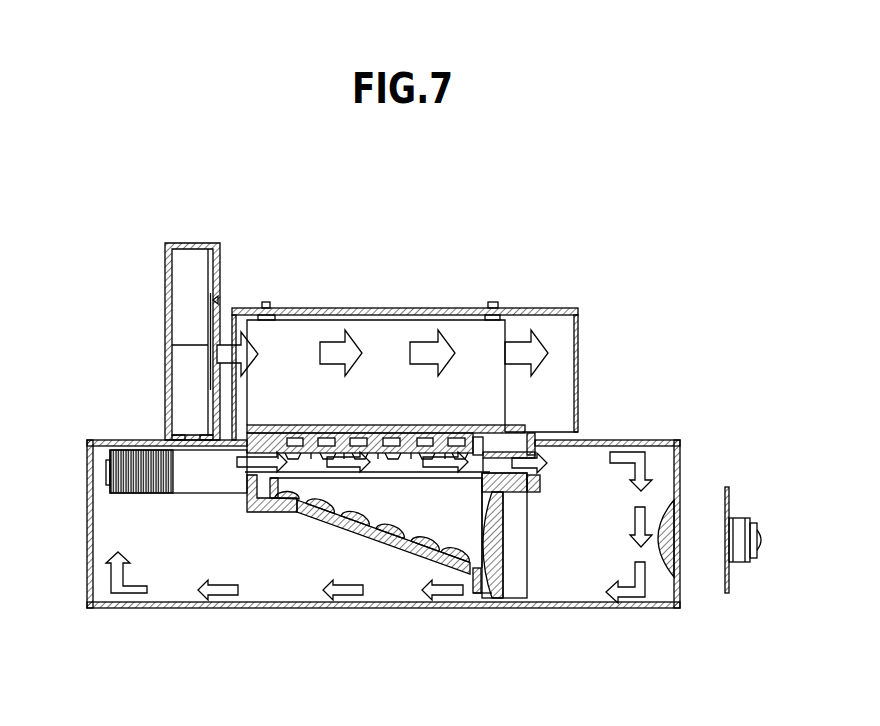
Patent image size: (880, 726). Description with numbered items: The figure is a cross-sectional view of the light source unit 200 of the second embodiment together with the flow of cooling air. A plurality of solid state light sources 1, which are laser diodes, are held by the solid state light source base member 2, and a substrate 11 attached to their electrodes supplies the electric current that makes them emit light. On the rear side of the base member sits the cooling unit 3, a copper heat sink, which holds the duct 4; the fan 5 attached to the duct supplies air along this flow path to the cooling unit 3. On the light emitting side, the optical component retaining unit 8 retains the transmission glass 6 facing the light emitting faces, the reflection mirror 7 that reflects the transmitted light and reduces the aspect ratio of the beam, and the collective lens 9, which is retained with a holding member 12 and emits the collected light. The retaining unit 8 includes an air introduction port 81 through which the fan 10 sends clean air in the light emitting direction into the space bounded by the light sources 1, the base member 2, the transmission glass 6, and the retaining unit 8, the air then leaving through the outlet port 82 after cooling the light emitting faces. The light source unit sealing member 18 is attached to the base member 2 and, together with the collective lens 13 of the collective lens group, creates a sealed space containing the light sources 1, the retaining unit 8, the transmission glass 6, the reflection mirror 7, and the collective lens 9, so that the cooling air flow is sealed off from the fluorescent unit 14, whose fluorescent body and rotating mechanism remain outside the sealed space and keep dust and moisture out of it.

The light source unit 200 is at (110, 190).
The solid state light sources 1 is at (325, 478).
The solid state light source base member 2 is at (247, 440).
The cooling unit 3 is at (388, 338).
The duct 4 is at (556, 333).
The fan 5 is at (185, 297).
The transmission glass 6 is at (443, 480).
The reflection mirror 7 is at (387, 520).
The optical component retaining unit 8 is at (340, 528).
The air introduction port 81 is at (262, 478).
The outlet port 82 is at (523, 453).
The collective lens 9 is at (503, 543).
The fan 10 is at (110, 487).
The substrate 11 is at (283, 425).
The holding member 12 is at (510, 598).
The collective lens 13 is at (677, 540).
The fluorescent unit 14 is at (777, 470).
The light source unit sealing member 18 is at (87, 567).